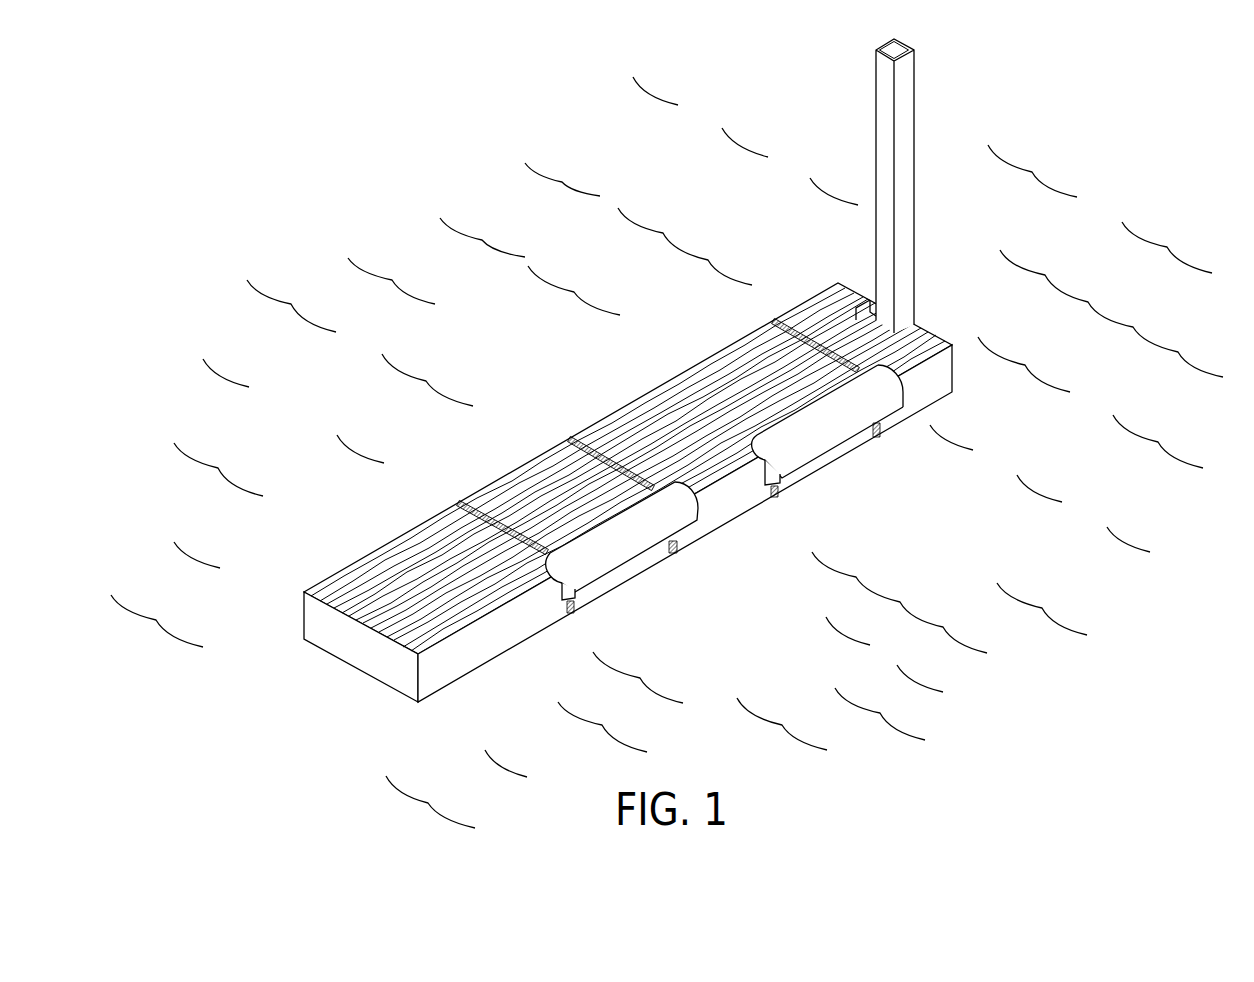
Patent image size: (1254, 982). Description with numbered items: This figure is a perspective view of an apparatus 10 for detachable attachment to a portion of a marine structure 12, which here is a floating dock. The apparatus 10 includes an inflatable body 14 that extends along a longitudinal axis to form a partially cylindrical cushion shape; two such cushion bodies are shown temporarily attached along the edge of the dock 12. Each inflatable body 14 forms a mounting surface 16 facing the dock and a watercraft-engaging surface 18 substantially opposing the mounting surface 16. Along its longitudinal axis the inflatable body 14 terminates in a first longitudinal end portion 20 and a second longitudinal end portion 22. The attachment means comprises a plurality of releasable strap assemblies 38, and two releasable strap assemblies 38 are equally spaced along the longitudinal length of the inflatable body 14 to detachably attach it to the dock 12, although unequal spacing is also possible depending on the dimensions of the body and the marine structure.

The apparatus 10 is at (652, 370).
The marine structure 12 is at (372, 565).
The inflatable body 14 is at (840, 427).
The mounting surface 16 is at (558, 594).
The watercraft-engaging surface 18 is at (630, 547).
The first longitudinal end portion 20 is at (772, 467).
The second longitudinal end portion 22 is at (907, 390).
The releasable strap assembly 38 is at (506, 524).